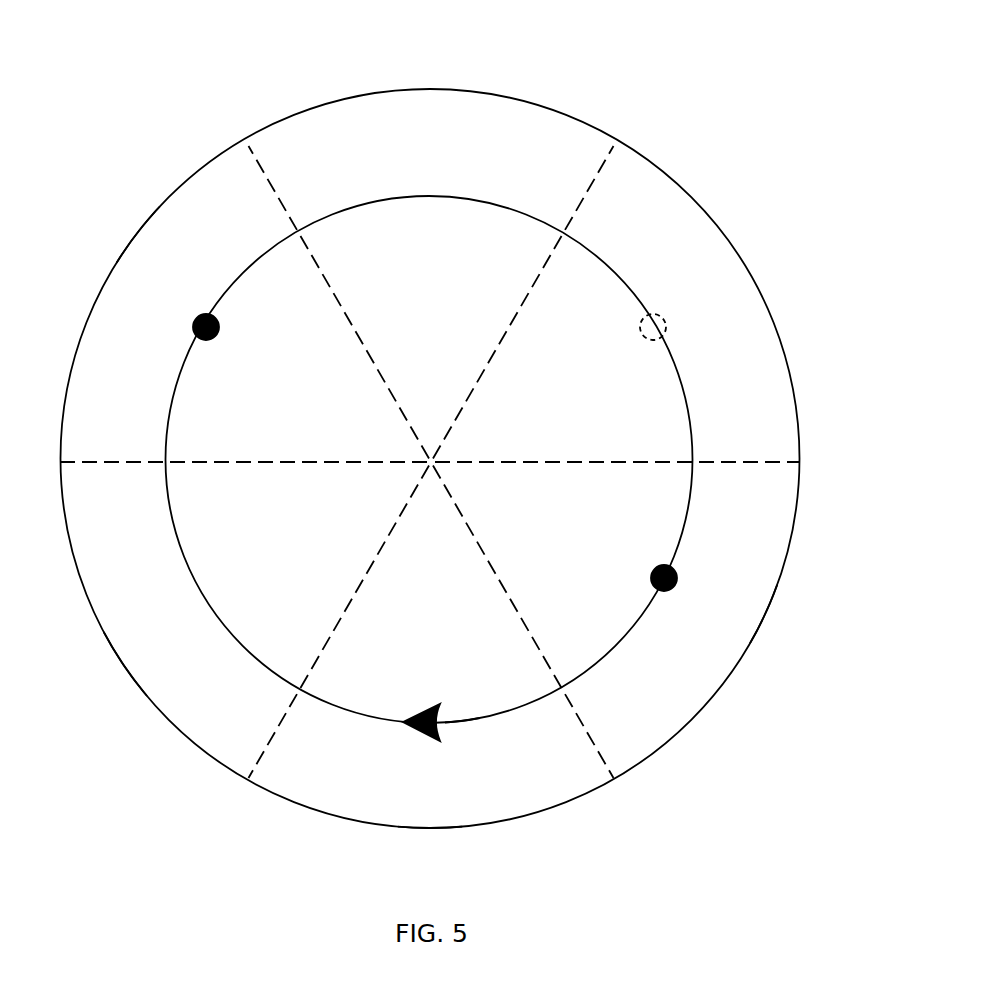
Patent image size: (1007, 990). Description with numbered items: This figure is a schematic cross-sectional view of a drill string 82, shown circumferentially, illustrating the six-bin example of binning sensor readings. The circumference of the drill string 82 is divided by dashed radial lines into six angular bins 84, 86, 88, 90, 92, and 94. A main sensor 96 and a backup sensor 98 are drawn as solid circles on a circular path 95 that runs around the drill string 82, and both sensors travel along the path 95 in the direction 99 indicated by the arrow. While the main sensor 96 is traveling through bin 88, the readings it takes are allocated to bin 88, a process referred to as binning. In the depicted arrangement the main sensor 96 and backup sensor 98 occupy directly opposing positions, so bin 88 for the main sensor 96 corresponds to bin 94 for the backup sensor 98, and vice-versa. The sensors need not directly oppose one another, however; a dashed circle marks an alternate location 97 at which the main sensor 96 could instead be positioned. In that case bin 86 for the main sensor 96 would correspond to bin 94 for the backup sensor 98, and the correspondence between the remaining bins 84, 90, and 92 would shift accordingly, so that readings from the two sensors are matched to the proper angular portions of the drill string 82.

The drill string 82 is at (703, 90).
The bin 84 is at (430, 89).
The bin 86 is at (738, 252).
The bin 88 is at (765, 617).
The bin 90 is at (430, 827).
The bin 92 is at (122, 668).
The bin 94 is at (137, 237).
The path 95 is at (480, 718).
The main sensor 96 is at (675, 582).
The location 97 is at (667, 326).
The backup sensor 98 is at (196, 320).
The direction 99 is at (423, 732).